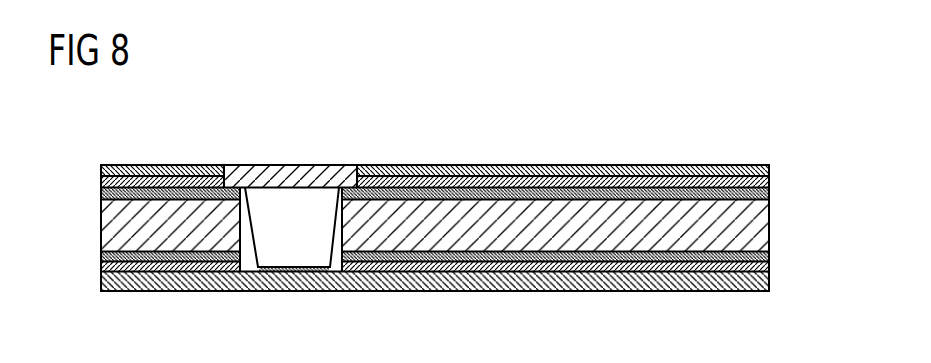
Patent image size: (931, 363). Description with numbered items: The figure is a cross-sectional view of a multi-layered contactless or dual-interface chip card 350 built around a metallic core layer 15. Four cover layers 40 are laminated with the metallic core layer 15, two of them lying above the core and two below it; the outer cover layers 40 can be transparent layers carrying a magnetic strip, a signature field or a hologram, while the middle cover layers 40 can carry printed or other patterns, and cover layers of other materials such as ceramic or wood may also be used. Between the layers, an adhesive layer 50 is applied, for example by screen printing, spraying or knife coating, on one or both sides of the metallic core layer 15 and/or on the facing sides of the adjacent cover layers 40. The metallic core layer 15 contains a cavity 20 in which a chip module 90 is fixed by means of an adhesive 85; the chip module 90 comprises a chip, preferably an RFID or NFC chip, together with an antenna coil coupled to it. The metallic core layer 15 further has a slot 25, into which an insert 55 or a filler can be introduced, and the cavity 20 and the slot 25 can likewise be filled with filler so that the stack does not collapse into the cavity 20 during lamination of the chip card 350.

The chip card 350 is at (641, 142).
The chip module 90 is at (289, 165).
The cover layer 40 is at (745, 165).
The adhesive layer 50 is at (769, 193).
The metallic core layer 15 is at (762, 233).
The slot 25 is at (112, 227).
The insert 55 is at (158, 226).
The cavity 20 is at (250, 270).
The adhesive 85 is at (300, 268).